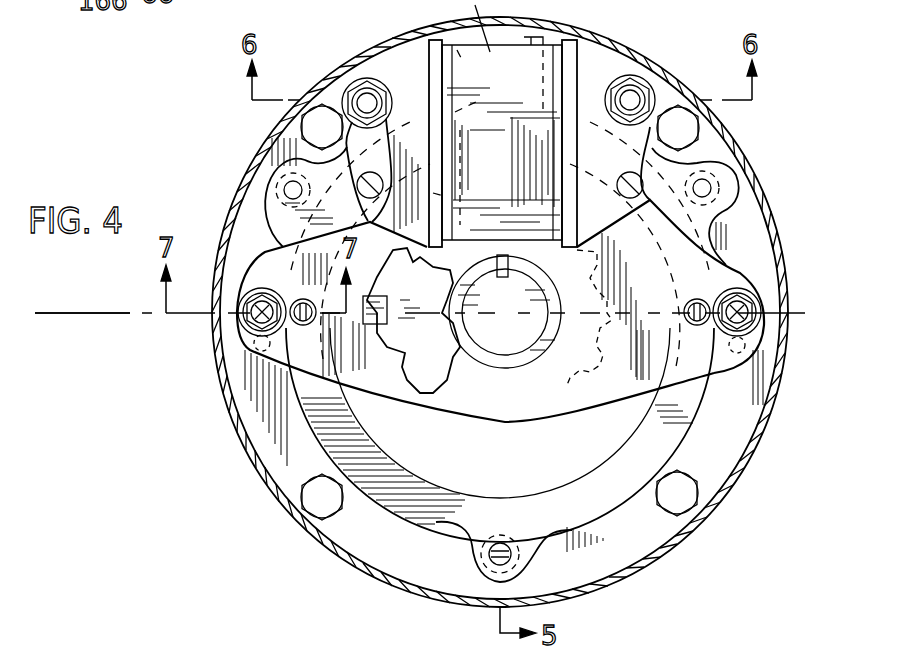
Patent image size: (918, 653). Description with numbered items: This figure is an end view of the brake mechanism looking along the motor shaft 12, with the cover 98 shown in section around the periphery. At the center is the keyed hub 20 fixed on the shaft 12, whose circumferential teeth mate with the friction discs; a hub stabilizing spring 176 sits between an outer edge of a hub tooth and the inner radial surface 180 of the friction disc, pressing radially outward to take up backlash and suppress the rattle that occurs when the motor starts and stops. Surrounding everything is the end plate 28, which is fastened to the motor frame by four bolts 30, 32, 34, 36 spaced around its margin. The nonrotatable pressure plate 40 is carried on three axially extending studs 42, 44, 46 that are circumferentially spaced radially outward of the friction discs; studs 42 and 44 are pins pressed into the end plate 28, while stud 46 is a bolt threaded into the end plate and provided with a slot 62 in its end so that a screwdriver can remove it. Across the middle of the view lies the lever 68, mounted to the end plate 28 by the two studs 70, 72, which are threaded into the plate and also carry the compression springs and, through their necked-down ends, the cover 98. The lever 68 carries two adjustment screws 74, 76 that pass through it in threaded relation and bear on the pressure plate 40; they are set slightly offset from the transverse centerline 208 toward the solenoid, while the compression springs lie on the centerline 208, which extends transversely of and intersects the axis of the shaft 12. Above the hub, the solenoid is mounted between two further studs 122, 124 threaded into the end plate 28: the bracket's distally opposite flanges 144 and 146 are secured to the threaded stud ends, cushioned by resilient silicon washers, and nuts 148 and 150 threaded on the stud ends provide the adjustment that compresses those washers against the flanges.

The shaft 12 is at (520, 352).
The keyed hub 20 is at (470, 300).
The end plate 28 is at (366, 553).
The bolt 30 is at (310, 122).
The bolt 32 is at (320, 504).
The bolt 34 is at (677, 500).
The bolt 36 is at (690, 127).
The pressure plate 40 is at (434, 512).
The stud 42 is at (706, 188).
The stud 44 is at (290, 198).
The stud 46 is at (504, 545).
The slot 62 is at (487, 565).
The lever 68 is at (597, 403).
The stud 70 is at (742, 324).
The stud 72 is at (255, 330).
The adjustment screw 74 is at (706, 326).
The adjustment screw 76 is at (308, 323).
The cover 98 is at (769, 206).
The stud 122 is at (630, 97).
The stud 124 is at (367, 100).
The bracket flange 144 is at (588, 62).
The bracket flange 146 is at (427, 45).
The nut 148 is at (645, 92).
The nut 150 is at (380, 98).
The hub stabilizing spring 176 is at (378, 325).
The inner radial surface 180 is at (408, 332).
The transverse centerline 208 is at (93, 313).